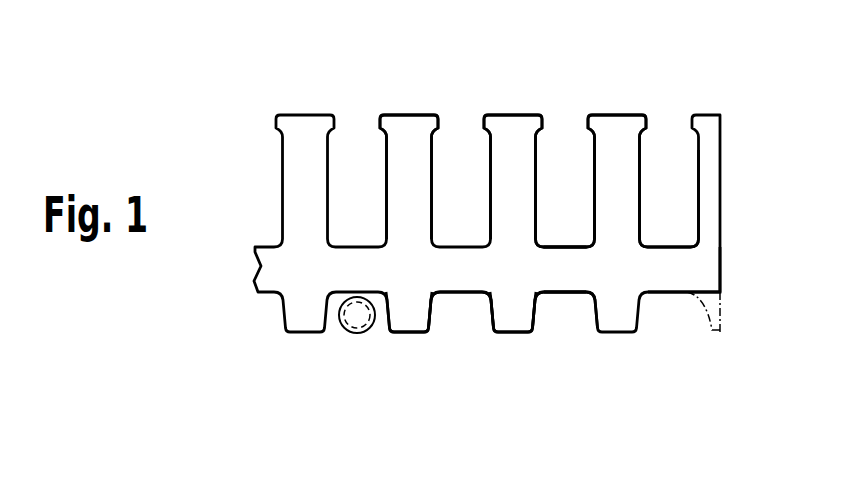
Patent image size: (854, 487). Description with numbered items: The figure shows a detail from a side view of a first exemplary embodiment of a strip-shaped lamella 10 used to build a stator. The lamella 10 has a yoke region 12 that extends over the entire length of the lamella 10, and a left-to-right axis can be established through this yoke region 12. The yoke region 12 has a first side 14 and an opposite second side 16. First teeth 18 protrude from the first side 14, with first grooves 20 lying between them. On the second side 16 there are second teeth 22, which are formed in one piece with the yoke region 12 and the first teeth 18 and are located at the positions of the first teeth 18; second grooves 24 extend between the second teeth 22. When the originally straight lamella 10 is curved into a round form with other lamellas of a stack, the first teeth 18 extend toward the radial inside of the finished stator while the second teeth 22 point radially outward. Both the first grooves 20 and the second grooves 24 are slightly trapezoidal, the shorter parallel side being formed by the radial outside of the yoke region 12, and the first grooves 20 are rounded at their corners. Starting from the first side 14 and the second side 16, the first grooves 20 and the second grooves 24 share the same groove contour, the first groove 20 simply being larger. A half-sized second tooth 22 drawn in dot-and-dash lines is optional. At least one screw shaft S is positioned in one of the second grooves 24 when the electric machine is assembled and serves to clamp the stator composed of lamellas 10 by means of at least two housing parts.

The strip-shaped lamella 10 is at (556, 74).
The yoke region 12 is at (682, 267).
The first side 14 is at (544, 260).
The second side 16 is at (577, 273).
The first teeth 18 is at (409, 145).
The first grooves 20 is at (582, 212).
The second teeth 22 is at (408, 313).
The second grooves 24 is at (475, 332).
The screw shaft S is at (357, 318).